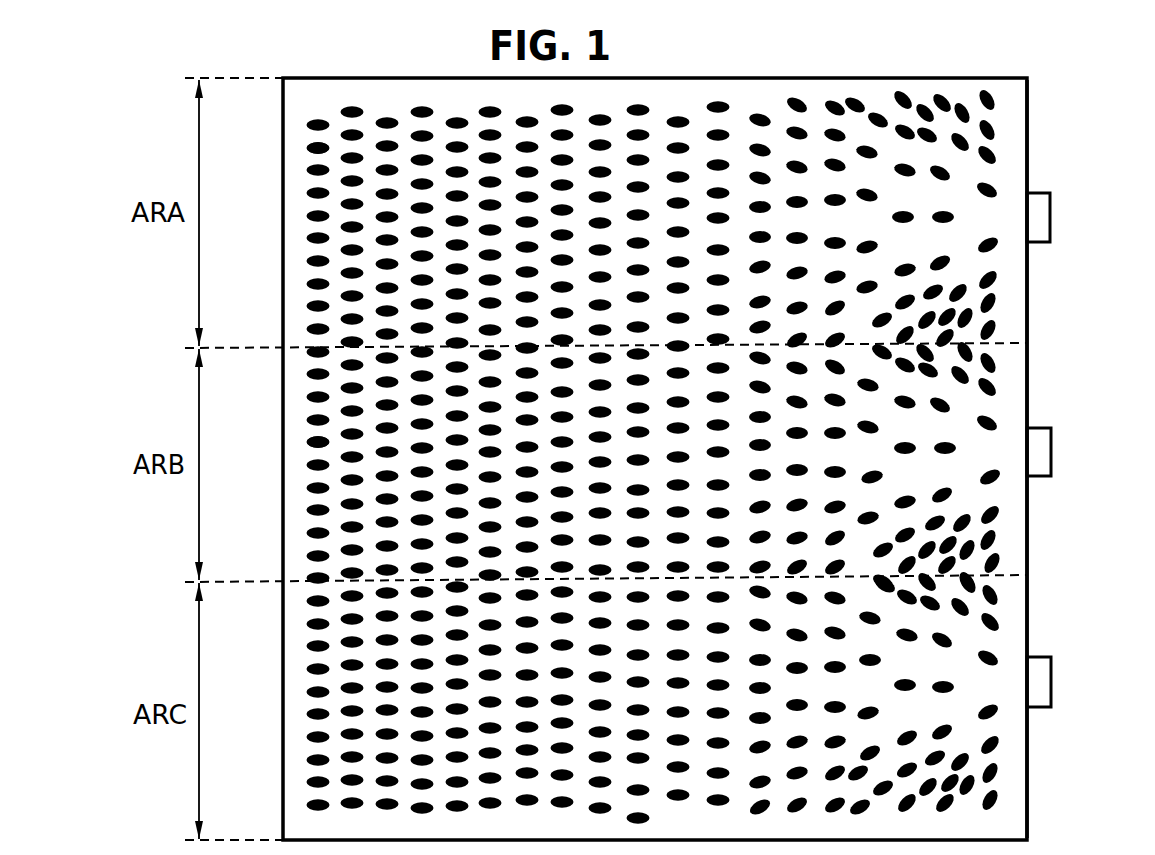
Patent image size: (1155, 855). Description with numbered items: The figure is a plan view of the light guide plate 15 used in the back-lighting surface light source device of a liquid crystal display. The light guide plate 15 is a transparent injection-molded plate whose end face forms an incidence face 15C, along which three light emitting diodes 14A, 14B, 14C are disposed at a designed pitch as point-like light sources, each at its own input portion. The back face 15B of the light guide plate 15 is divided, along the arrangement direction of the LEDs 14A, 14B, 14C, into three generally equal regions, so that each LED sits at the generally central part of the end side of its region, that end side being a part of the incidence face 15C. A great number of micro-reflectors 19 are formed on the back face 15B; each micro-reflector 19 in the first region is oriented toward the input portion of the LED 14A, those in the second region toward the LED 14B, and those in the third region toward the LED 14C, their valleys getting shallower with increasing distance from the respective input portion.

The light guide plate 15 is at (1013, 328).
The back face 15B is at (1012, 108).
The incidence face 15C is at (1028, 150).
The light emitting diode 14A is at (1040, 226).
The light emitting diode 14B is at (1045, 463).
The light emitting diode 14C is at (1045, 675).
The micro-reflector 19 is at (312, 148).